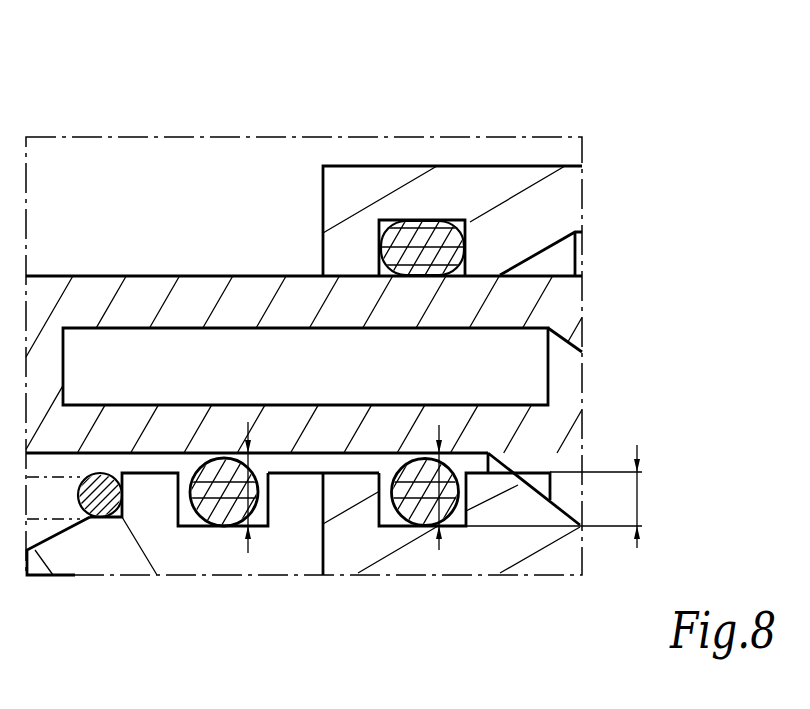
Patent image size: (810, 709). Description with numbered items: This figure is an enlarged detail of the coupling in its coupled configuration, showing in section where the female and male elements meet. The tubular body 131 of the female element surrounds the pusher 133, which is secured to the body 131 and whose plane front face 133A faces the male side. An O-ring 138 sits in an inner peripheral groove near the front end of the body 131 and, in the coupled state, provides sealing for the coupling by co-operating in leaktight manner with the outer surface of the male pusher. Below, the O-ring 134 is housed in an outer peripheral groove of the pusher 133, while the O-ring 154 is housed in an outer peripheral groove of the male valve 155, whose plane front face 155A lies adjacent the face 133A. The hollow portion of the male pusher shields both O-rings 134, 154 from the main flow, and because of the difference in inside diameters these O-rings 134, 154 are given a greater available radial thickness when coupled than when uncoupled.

The tubular body 131 is at (512, 187).
The O-ring 138 is at (432, 235).
The pusher 133 is at (513, 553).
The plane front face of the pusher 133A is at (290, 551).
The O-ring 134 is at (407, 527).
The O-ring 154 is at (205, 527).
The valve 155 is at (90, 557).
The plane front face of the valve 155A is at (338, 555).